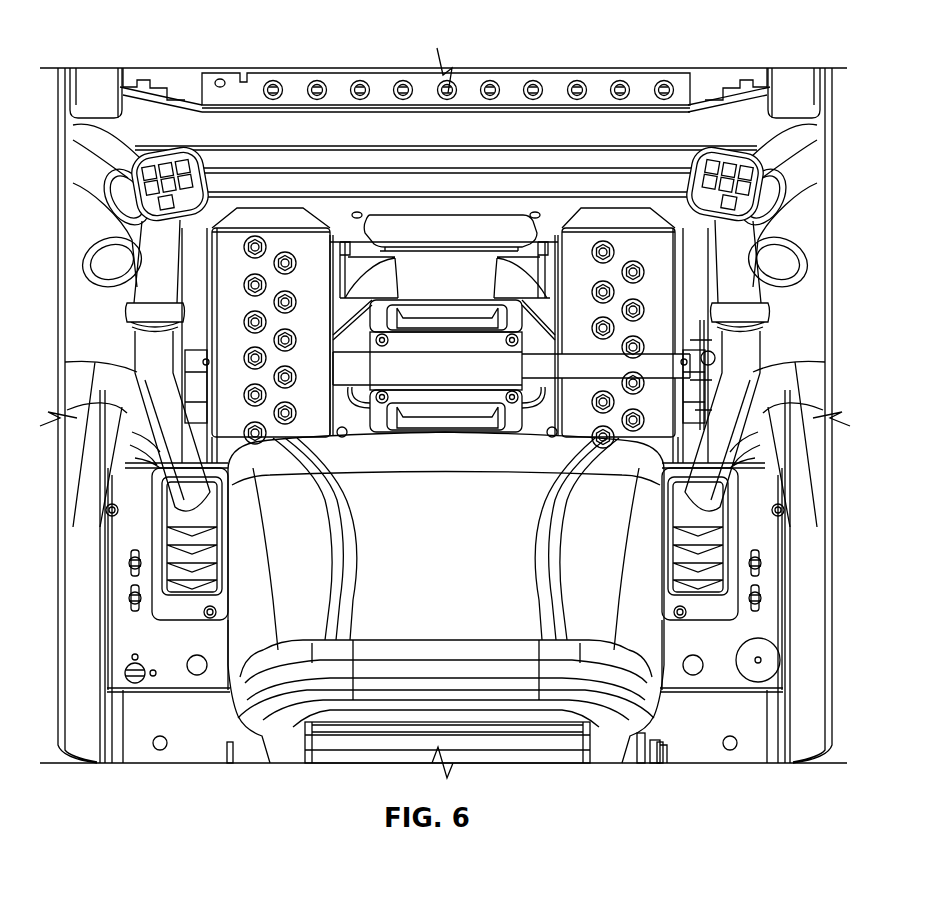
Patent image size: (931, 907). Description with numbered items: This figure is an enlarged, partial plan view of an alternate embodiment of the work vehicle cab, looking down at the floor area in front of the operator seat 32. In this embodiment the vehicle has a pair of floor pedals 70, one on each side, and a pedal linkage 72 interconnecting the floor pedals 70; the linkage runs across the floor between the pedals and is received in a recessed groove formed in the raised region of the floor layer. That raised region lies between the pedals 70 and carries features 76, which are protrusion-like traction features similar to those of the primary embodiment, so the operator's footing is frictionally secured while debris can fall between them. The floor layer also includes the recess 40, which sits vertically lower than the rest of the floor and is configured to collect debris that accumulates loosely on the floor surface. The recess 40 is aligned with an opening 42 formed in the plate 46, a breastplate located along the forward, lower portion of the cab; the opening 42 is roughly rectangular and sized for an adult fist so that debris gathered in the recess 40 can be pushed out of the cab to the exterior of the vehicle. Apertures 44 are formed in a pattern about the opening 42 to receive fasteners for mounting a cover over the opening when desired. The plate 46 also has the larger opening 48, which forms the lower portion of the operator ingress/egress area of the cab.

The operator seat 32 is at (474, 545).
The recess 40 is at (445, 289).
The opening 42 is at (427, 243).
The apertures 44 is at (538, 213).
The plate 46 is at (397, 207).
The opening 48 is at (338, 107).
The floor pedals 70 is at (662, 213).
The pedal linkage 72 is at (527, 378).
The features 76 is at (422, 432).